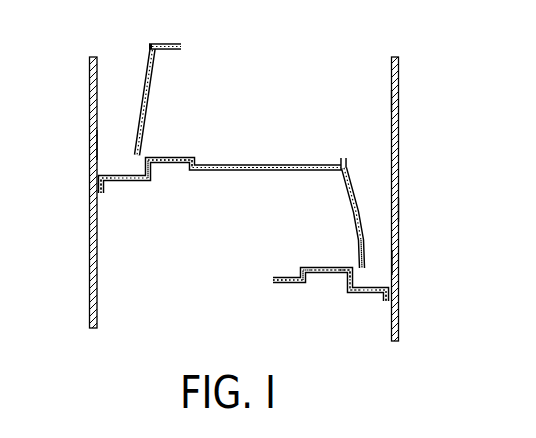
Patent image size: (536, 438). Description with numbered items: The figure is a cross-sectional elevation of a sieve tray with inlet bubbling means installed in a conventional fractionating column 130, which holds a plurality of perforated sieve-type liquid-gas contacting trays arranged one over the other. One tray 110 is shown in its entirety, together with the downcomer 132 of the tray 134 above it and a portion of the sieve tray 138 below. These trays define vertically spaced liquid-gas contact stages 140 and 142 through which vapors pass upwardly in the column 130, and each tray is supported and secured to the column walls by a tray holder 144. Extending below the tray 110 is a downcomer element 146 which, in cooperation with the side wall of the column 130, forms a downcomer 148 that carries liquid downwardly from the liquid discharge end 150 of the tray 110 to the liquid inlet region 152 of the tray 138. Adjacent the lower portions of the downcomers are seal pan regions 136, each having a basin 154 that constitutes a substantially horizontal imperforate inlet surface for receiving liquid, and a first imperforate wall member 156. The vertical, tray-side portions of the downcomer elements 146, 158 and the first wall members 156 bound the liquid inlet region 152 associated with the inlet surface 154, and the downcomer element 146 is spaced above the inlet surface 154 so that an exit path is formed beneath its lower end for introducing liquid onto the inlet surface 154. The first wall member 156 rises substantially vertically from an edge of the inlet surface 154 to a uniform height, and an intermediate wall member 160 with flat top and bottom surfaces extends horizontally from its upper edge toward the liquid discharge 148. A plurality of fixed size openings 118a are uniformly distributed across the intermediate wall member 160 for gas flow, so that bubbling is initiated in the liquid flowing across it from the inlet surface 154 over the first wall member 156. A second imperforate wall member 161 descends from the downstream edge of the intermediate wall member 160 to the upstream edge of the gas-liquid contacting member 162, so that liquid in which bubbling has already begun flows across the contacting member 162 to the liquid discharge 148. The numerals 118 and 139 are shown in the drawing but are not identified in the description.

The tray 110 is at (308, 163).
The upper panel 118 is at (236, 171).
The fixed size openings 118a is at (172, 164).
The fractionating column 130 is at (397, 79).
The downcomer 132 is at (121, 114).
The tray 134 is at (170, 48).
The seal pan region 136 is at (110, 142).
The sieve tray 138 is at (329, 285).
The lower panel end 139 is at (277, 283).
The liquid-gas contact stage 140 is at (115, 264).
The liquid-gas contact stage 142 is at (368, 99).
The tray holder 144 is at (101, 186).
The downcomer element 146 is at (150, 84).
The downcomer 148 is at (375, 213).
The liquid discharge end 150 is at (343, 157).
The liquid inlet region 152 is at (139, 160).
The basin 154 is at (98, 178).
The first imperforate wall member 156 is at (153, 182).
The downcomer element 158 is at (366, 247).
The intermediate wall member 160 is at (197, 156).
The second imperforate wall member 161 is at (196, 162).
The gas-liquid contacting member 162 is at (263, 162).